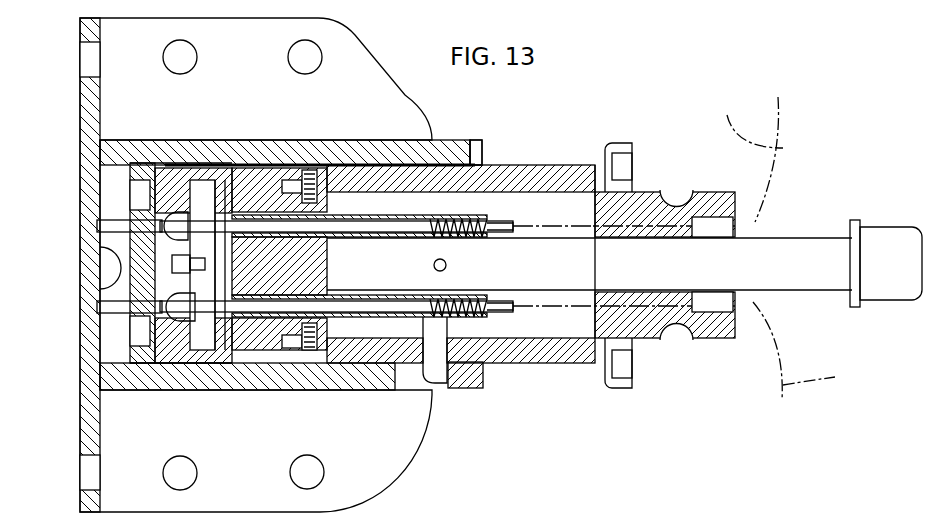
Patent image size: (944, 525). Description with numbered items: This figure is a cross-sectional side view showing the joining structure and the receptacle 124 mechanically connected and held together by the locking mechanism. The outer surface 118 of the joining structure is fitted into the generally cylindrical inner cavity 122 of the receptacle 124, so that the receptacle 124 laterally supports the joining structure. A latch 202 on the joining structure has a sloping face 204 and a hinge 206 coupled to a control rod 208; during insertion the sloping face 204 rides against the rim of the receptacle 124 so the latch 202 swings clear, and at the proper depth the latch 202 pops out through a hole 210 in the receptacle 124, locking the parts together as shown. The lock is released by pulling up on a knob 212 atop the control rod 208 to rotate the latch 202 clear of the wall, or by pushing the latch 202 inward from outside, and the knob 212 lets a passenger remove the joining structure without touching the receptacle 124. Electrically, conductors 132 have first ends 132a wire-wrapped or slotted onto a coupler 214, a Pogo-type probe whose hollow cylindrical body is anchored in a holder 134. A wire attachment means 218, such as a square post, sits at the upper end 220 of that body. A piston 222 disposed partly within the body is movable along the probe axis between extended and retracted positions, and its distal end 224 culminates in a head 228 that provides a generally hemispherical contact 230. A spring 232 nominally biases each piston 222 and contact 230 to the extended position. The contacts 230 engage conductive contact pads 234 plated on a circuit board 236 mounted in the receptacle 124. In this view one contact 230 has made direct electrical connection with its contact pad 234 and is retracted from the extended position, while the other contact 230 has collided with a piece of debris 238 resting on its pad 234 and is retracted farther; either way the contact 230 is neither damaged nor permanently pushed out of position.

The outer surface 118 is at (405, 170).
The inner cavity 122 is at (490, 157).
The receptacle 124 is at (155, 150).
The conductors 132 is at (740, 241).
The first ends 132a is at (515, 225).
The holder 134 is at (268, 178).
The latch 202 is at (450, 388).
The sloping face 204 is at (430, 385).
The hinge 206 is at (448, 265).
The control rod 208 is at (795, 243).
The hole 210 is at (442, 400).
The knob 212 is at (880, 240).
The coupler 214 is at (340, 178).
The wire attachment means 218 is at (520, 208).
The upper end 220 is at (475, 165).
The piston 222 is at (223, 180).
The distal end 224 is at (200, 175).
The head 228 is at (185, 213).
The contact 230 is at (172, 290).
The spring 232 is at (437, 232).
The contact pads 234 is at (175, 238).
The circuit board 236 is at (155, 249).
The debris 238 is at (175, 325).